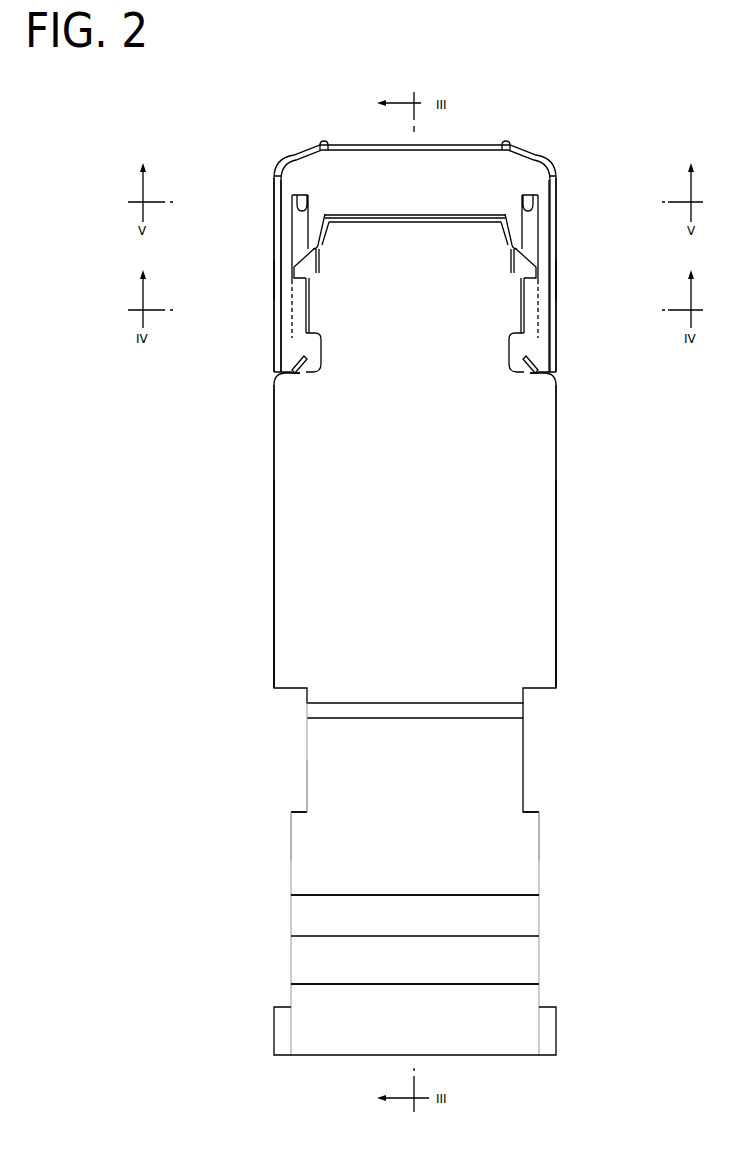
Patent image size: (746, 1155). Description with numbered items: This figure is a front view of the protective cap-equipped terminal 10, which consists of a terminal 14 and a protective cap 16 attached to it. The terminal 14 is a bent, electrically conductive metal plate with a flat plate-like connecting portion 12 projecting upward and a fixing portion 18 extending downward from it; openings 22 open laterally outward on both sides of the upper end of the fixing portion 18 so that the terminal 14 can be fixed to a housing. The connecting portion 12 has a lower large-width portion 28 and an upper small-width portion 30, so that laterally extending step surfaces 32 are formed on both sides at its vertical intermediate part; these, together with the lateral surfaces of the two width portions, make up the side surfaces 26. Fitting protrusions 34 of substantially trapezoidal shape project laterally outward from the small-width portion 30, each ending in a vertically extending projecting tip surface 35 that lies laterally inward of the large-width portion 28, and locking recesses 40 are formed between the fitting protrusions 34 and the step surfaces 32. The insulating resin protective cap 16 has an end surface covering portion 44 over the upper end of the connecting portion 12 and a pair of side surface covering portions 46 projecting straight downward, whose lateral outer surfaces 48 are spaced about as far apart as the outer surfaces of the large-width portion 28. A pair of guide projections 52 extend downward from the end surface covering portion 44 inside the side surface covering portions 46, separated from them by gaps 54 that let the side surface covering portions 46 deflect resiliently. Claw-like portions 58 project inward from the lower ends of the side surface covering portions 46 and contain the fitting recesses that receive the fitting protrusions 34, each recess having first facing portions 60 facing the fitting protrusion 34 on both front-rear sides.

The protective cap-equipped terminal 10 is at (614, 114).
The connecting portion 12 is at (603, 433).
The terminal 14 is at (570, 394).
The protective cap 16 is at (545, 128).
The fixing portion 18 is at (475, 957).
The openings 22 is at (291, 812).
The side surfaces 26 is at (274, 566).
The large-width portion 28 is at (410, 533).
The small-width portion 30 is at (417, 313).
The step surfaces 32 is at (303, 358).
The fitting protrusions 34 is at (291, 262).
The projecting tip surface 35 is at (292, 302).
The locking recesses 40 is at (311, 346).
The end surface covering portion 44 is at (423, 183).
The side surface covering portions 46 is at (269, 222).
The lateral outer surfaces 48 is at (281, 279).
The guide projections 52 is at (303, 228).
The gaps 54 is at (313, 210).
The claw-like portions 58 is at (301, 380).
The first facing portions 60 is at (298, 326).